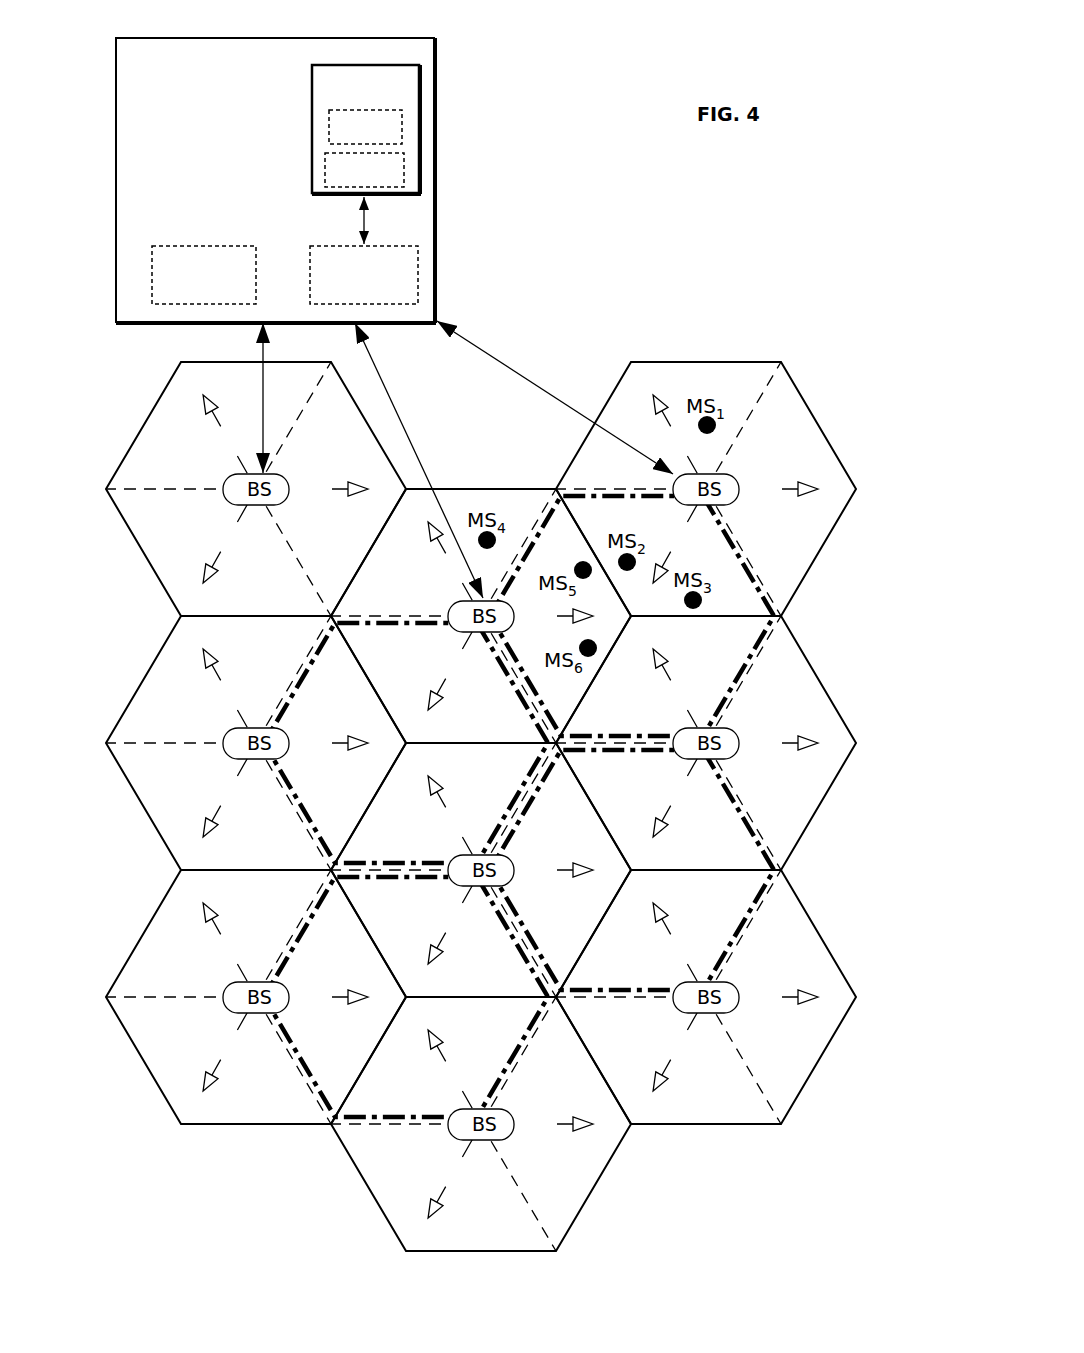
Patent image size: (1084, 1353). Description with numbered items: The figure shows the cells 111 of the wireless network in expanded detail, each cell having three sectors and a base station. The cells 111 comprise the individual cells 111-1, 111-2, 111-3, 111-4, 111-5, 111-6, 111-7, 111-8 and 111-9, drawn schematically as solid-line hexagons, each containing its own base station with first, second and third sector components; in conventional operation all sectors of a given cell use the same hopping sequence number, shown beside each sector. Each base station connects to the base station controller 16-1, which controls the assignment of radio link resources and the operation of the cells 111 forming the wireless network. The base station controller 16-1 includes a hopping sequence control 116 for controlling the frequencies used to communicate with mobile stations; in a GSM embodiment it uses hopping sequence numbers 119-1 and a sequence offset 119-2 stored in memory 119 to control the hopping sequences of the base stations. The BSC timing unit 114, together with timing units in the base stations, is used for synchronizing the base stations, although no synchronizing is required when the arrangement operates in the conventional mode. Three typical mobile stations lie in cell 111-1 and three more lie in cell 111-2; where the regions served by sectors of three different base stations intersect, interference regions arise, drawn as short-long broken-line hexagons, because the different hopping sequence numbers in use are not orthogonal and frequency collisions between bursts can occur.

The base station controller 16-1 is at (355, 37).
The memory 119 is at (395, 65).
The hopping sequence numbers 119-1 is at (402, 128).
The sequence offset 119-2 is at (404, 170).
The BSC timing unit 114 is at (152, 258).
The hopping sequence control 116 is at (418, 273).
The cells 111 is at (658, 301).
The cell 111-1 is at (820, 418).
The cell 111-2 is at (533, 489).
The cell 111-3 is at (814, 670).
The cell 111-4 is at (499, 997).
The cell 111-5 is at (823, 940).
The cell 111-6 is at (593, 1192).
The cell 111-7 is at (131, 445).
The cell 111-8 is at (125, 710).
The cell 111-9 is at (129, 960).